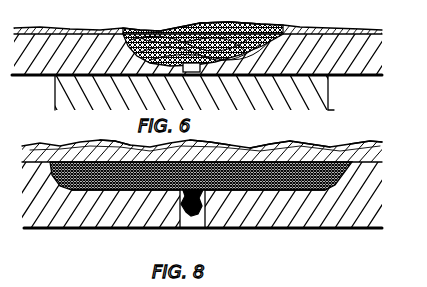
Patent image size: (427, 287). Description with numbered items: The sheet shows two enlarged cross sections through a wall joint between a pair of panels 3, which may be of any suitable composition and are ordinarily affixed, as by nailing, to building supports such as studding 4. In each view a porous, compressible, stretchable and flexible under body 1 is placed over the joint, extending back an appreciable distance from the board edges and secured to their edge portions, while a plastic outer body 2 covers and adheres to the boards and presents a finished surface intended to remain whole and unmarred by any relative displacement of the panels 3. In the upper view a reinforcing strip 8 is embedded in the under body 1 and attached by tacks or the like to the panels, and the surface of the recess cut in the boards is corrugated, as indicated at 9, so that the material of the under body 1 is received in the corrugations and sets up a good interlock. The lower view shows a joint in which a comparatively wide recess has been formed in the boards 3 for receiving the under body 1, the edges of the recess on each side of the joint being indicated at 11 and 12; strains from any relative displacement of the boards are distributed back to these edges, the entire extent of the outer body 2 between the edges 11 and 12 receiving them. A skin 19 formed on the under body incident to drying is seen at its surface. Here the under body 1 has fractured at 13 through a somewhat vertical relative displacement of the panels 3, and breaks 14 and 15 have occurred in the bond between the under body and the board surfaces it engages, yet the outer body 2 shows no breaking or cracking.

In FIG. 6, the under body 1 is at (280, 24).
In FIG. 8, the under body 1 is at (268, 160).
In FIG. 6, the outer body 2 is at (78, 26).
In FIG. 8, the outer body 2 is at (115, 142).
In FIG. 6, the panels 3 is at (41, 68).
In FIG. 8, the panels 3 is at (67, 220).
In FIG. 6, the studding 4 is at (327, 99).
In FIG. 6, the reinforcing strip 8 is at (214, 35).
In FIG. 6, the corrugations 9 is at (150, 40).
In FIG. 8, the recess edge 11 is at (44, 160).
In FIG. 8, the recess edge 12 is at (356, 159).
In FIG. 8, the fracture 13 is at (197, 222).
In FIG. 8, the bond break 14 is at (102, 190).
In FIG. 8, the bond break 15 is at (271, 192).
In FIG. 8, the skin 19 is at (219, 160).